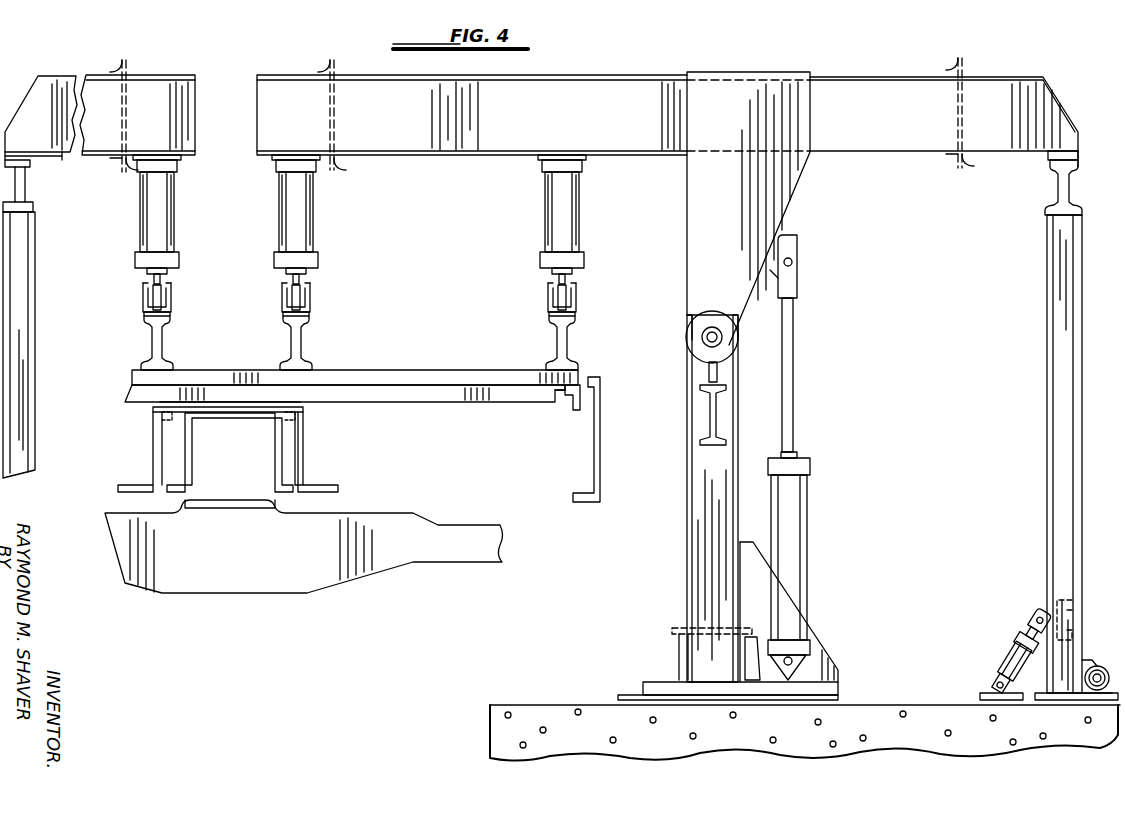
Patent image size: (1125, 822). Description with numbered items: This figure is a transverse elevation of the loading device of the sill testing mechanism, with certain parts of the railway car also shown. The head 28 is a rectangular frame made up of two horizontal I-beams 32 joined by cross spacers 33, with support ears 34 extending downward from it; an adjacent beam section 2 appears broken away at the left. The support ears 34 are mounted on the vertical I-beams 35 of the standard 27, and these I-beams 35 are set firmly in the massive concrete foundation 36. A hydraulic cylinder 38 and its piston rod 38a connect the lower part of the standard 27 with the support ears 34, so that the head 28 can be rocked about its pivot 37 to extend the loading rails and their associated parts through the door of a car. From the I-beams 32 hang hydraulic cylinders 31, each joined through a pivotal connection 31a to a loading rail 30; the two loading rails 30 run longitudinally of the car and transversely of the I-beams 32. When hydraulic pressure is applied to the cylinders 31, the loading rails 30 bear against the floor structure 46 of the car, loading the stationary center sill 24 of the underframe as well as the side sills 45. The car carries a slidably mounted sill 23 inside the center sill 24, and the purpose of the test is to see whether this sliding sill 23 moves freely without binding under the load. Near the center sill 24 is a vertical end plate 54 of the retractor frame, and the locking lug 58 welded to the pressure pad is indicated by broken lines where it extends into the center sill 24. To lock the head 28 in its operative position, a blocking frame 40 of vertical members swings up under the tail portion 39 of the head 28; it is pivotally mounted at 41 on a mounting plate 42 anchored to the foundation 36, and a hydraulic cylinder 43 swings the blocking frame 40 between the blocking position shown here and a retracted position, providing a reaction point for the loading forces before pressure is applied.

The beam end section 2 is at (30, 112).
The head 28 is at (183, 52).
The cross spacers 33 is at (332, 71).
The tail portion 39 is at (1000, 88).
The I-beams 32 is at (636, 118).
The support ears 34 is at (745, 223).
The hydraulic cylinders 31 is at (140, 213).
The pivotal connection 31a is at (310, 297).
The loading rails 30 is at (155, 350).
The floor structure 46 is at (402, 396).
The locking lug 58 is at (165, 424).
The vertical end plates 54 is at (300, 417).
The center sill 24 is at (305, 437).
The sliding sill 23 is at (272, 462).
The side sills 45 is at (600, 468).
The pivot 37 is at (703, 338).
The piston rod 38a is at (793, 388).
The hydraulic cylinder 38 is at (808, 518).
The vertical I-beams 35 is at (689, 537).
The standard 27 is at (665, 578).
The blocking frame 40 is at (1076, 448).
The pivotal mounting 41 is at (1074, 641).
The mounting plate 42 is at (1104, 668).
The hydraulic cylinder 43 is at (1010, 661).
The concrete foundation 36 is at (497, 728).